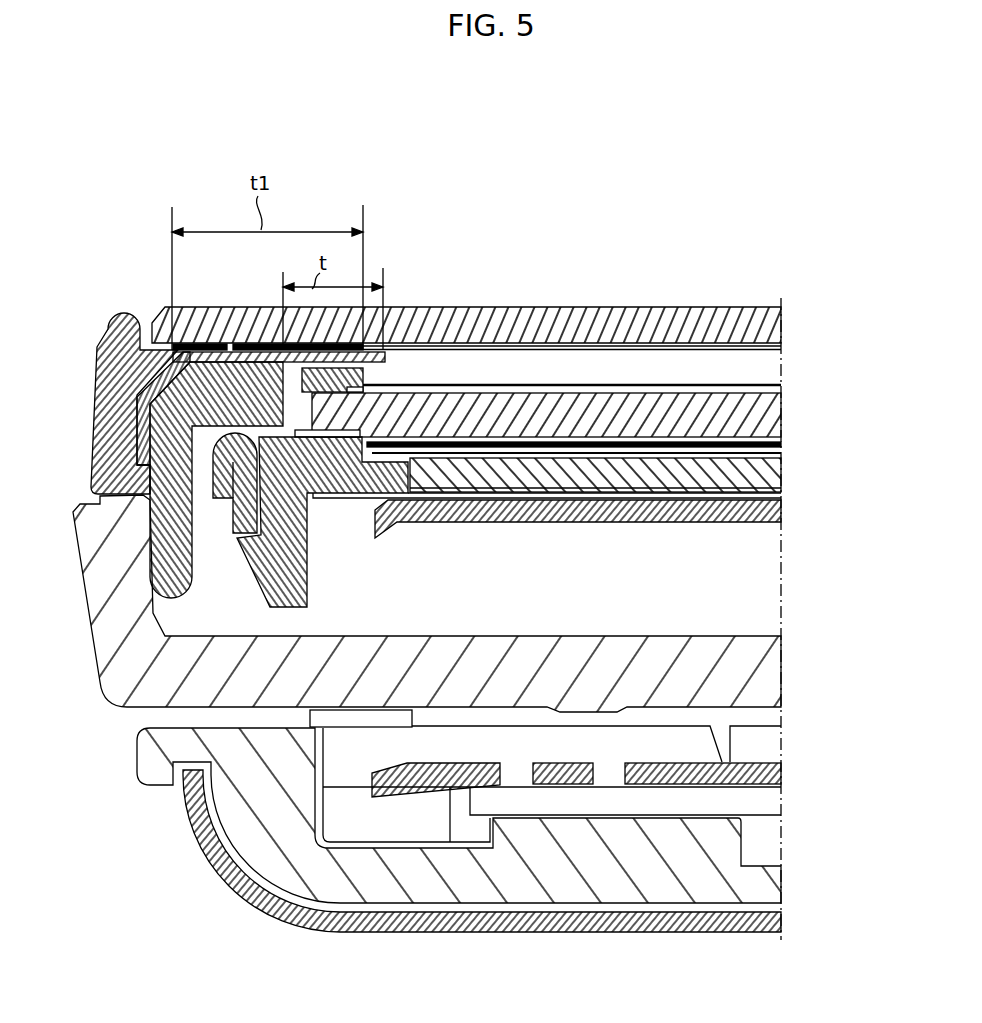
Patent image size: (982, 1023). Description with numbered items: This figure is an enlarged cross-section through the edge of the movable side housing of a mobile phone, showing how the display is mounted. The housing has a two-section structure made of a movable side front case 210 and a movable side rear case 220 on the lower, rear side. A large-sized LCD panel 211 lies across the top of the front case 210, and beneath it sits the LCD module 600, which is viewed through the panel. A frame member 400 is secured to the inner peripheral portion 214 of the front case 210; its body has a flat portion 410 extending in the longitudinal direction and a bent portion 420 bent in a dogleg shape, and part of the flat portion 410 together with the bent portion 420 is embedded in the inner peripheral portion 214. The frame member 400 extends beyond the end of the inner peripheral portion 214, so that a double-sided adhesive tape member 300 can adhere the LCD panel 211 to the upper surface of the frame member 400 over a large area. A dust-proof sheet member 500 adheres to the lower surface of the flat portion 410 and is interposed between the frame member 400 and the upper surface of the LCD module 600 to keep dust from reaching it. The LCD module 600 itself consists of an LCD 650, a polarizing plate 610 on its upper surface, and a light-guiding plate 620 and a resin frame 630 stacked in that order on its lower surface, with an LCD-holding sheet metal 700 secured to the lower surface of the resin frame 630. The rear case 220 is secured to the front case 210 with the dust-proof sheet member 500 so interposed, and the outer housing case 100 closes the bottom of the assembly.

The bottom case 100 is at (217, 876).
The movable side front case 210 is at (106, 334).
The LCD panel 211 is at (593, 330).
The inner peripheral portion 214 is at (146, 466).
The movable side rear case 220 is at (104, 680).
The double-sided adhesive tape member 300 is at (200, 347).
The frame member 400 is at (385, 363).
The flat portion 410 is at (193, 373).
The bent portion 420 is at (138, 428).
The dust-proof sheet member 500 is at (362, 378).
The LCD module 600 is at (491, 507).
The polarizing plate 610 is at (783, 386).
The light-guiding plate 620 is at (783, 447).
The resin frame 630 is at (783, 478).
The LCD 650 is at (783, 414).
The LCD-holding sheet metal 700 is at (748, 513).